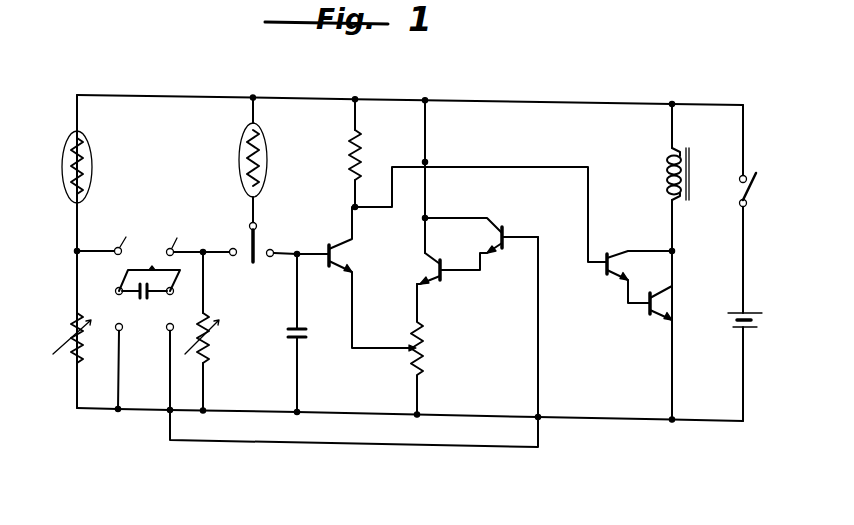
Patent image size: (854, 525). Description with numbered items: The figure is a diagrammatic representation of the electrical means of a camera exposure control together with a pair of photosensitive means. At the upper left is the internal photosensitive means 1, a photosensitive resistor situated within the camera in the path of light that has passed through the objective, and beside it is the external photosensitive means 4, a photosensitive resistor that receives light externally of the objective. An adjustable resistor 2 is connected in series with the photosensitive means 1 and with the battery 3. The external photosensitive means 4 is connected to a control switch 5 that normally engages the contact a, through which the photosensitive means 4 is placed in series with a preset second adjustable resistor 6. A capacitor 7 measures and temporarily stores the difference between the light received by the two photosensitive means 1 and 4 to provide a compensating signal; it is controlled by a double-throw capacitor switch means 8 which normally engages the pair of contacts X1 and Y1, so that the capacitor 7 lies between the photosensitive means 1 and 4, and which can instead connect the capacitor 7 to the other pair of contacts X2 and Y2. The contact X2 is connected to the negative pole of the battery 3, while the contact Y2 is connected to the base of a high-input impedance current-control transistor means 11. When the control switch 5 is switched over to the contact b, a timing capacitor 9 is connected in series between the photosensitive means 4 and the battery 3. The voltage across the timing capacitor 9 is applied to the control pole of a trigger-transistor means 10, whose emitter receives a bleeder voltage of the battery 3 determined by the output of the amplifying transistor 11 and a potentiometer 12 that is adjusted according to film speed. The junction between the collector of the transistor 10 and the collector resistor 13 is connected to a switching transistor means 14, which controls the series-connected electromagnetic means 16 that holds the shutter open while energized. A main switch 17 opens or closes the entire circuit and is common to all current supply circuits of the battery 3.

The internal photosensitive means 1 is at (92, 171).
The adjustable resistor 2 is at (88, 353).
The battery 3 is at (740, 335).
The external photosensitive means 4 is at (267, 172).
The control switch 5 is at (264, 244).
The second adjustable resistor 6 is at (213, 352).
The capacitor 7 is at (144, 303).
The capacitor switch means 8 is at (120, 272).
The timing capacitor 9 is at (292, 345).
The trigger-transistor means 10 is at (330, 273).
The current-control transistor means 11 is at (483, 275).
The potentiometer 12 is at (427, 352).
The collector resistor 13 is at (348, 163).
The switching transistor means 14 is at (612, 288).
The electromagnetic means 16 is at (665, 177).
The main switch 17 is at (739, 200).
The contact a is at (233, 257).
The contact b is at (270, 258).
The contact X1 is at (124, 239).
The contact X2 is at (128, 367).
The contact Y1 is at (178, 242).
The contact Y2 is at (164, 367).